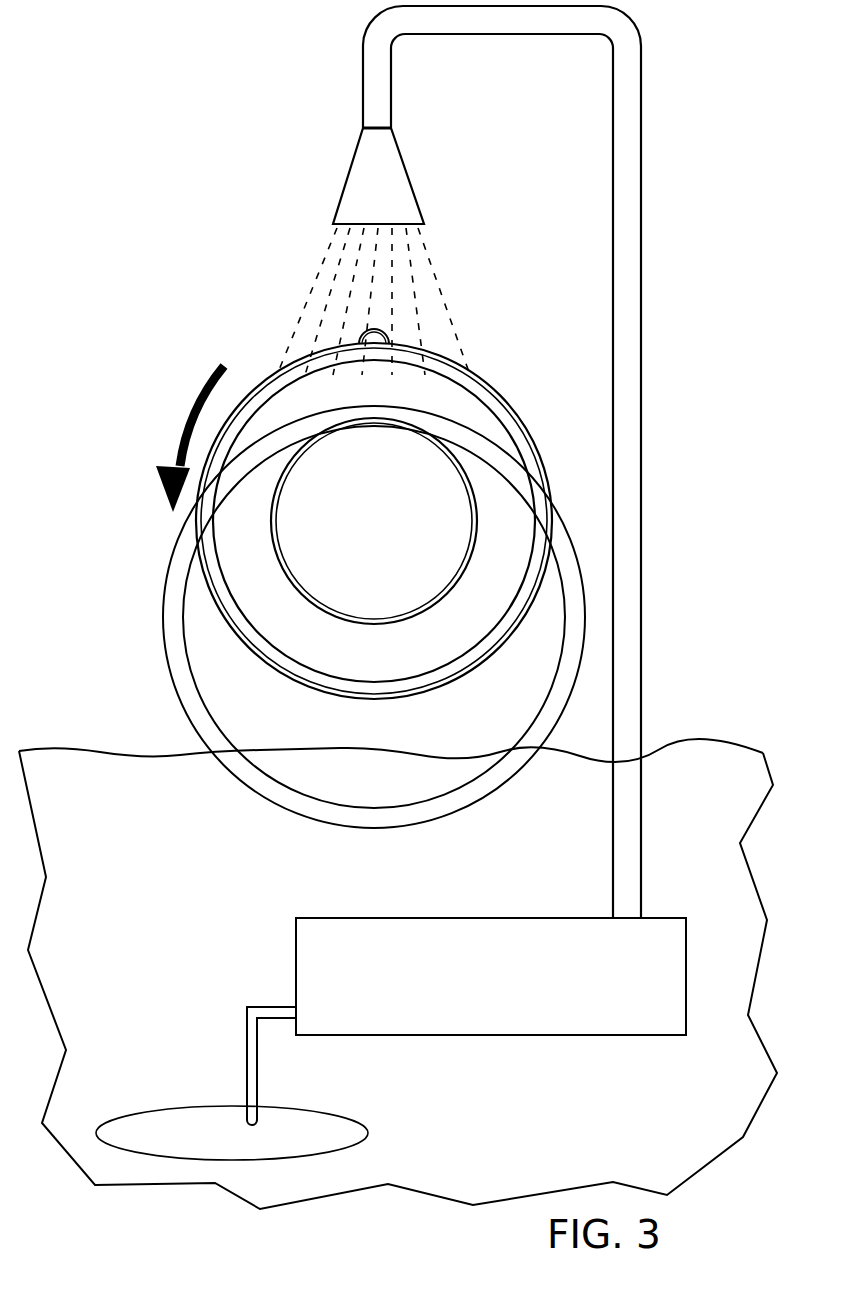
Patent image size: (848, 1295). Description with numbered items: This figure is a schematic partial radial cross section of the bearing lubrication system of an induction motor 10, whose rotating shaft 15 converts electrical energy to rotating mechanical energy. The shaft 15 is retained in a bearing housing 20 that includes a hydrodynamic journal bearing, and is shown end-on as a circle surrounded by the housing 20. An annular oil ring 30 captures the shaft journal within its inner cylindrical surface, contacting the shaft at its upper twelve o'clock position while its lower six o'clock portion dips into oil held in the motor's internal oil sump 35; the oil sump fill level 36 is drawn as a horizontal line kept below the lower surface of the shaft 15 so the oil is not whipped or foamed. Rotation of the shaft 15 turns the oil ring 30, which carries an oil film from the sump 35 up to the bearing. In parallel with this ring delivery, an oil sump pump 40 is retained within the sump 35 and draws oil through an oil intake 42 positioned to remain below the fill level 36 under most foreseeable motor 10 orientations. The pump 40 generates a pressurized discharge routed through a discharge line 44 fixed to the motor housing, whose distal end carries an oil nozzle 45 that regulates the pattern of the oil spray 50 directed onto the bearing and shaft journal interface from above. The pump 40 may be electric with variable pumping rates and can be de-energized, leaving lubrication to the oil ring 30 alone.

The induction motor 10 is at (105, 125).
The rotating shaft 15 is at (410, 532).
The bearing housing 20 is at (237, 600).
The oil ring 30 is at (180, 557).
The oil sump 35 is at (148, 860).
The oil sump fill level 36 is at (677, 745).
The oil sump pump 40 is at (558, 998).
The oil intake 42 is at (297, 1130).
The discharge line 44 is at (630, 50).
The oil nozzle 45 is at (387, 182).
The oil spray 50 is at (413, 290).